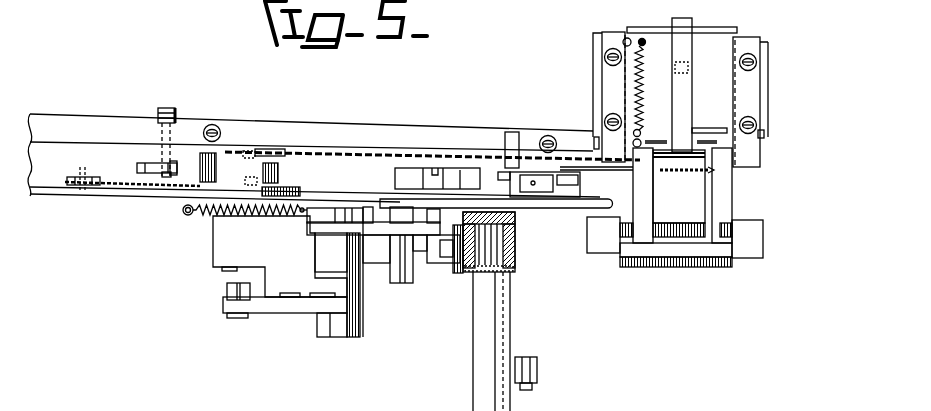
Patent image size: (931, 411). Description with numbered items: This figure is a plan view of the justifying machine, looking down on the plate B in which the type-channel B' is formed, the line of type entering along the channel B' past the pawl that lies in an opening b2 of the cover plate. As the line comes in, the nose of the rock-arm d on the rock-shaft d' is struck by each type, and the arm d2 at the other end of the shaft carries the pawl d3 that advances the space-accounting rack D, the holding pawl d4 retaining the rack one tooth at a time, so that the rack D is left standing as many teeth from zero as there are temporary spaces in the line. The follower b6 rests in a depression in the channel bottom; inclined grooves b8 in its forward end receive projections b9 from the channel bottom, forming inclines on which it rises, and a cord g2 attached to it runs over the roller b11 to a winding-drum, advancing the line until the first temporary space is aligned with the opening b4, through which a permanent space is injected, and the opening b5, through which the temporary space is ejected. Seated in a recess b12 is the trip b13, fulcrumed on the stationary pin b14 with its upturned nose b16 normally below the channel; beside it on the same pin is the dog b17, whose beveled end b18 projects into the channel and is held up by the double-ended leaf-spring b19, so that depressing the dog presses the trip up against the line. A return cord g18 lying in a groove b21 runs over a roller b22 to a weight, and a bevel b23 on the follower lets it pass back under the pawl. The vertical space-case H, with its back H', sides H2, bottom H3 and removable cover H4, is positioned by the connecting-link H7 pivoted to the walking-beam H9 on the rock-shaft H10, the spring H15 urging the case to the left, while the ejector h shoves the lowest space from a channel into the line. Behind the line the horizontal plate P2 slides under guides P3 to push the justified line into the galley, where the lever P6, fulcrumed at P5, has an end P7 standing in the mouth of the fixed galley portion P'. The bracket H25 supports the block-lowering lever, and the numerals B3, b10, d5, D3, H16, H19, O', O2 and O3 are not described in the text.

The plate B is at (314, 112).
The type-channel B' is at (215, 175).
The bar post B3 is at (483, 180).
The opening b2 is at (645, 80).
The opening b4 is at (518, 214).
The opening b5 is at (520, 173).
The follower b6 is at (252, 162).
The inclined grooves b8 is at (256, 178).
The projections b9 is at (288, 180).
The rod b10 is at (345, 192).
The roller b11 is at (695, 172).
The recess b12 is at (580, 170).
The trip b13 is at (560, 188).
The pin b14 is at (580, 176).
The nose b16 is at (500, 197).
The dog b17 is at (522, 172).
The beveled end b18 is at (523, 177).
The leaf-spring b19 is at (563, 193).
The groove b21 is at (358, 192).
The roller b22 is at (85, 193).
The bevel b23 is at (214, 155).
The rock-arm d is at (132, 204).
The rock-shaft d' is at (156, 132).
The arm d2 is at (176, 118).
The pawl d3 is at (145, 404).
The pawl d4 is at (173, 404).
The lever d5 is at (293, 406).
The rack D is at (125, 406).
The lever arm D3 is at (100, 405).
The cord g2 is at (317, 153).
The cord g18 is at (140, 193).
The space-case H is at (491, 341).
The back H' is at (496, 185).
The sides H2 is at (466, 222).
The bottom H3 is at (480, 273).
The removable cover H4 is at (467, 273).
The connecting-link H7 is at (402, 240).
The walking-beam H9 is at (308, 220).
The rock-shaft H10 is at (345, 333).
The spring H15 is at (265, 251).
The hammer arm H16 is at (288, 300).
The hammer lug H19 is at (226, 291).
The stationary bracket H25 is at (213, 252).
The ejector h is at (512, 348).
The slide O' is at (456, 153).
The slide block O2 is at (435, 173).
The slide block O3 is at (407, 170).
The fixed portion of the galley P' is at (675, 226).
The horizontal plate P2 is at (682, 85).
The guides P3 is at (604, 75).
The fulcrum P5 is at (590, 141).
The lever P6 is at (692, 50).
The end of lever P7 is at (680, 255).